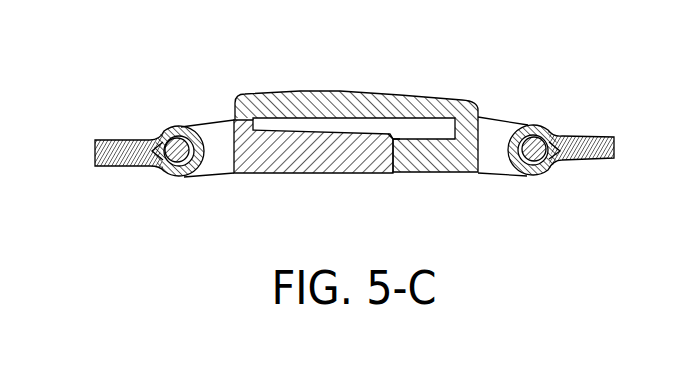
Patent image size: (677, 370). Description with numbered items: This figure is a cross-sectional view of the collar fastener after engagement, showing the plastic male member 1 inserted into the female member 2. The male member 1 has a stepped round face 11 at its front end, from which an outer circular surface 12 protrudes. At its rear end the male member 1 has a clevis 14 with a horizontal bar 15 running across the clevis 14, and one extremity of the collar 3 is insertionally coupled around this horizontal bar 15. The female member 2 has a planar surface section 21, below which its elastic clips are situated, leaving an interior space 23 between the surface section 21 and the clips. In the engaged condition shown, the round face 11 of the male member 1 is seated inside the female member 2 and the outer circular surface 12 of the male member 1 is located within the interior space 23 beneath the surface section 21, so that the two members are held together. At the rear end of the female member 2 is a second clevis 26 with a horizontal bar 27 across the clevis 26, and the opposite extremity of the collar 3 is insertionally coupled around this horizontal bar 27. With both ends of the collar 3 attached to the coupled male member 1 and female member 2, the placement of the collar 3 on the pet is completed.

The male member 1 is at (354, 152).
The female member 2 is at (356, 129).
The collar 3 is at (118, 168).
The round face 11 is at (293, 166).
The outer circular surface 12 is at (390, 135).
The clevis 14 is at (220, 138).
The horizontal bar 15 is at (161, 128).
The surface section 21 is at (423, 100).
The interior space 23 is at (427, 133).
The clevis 26 is at (503, 133).
The horizontal bar 27 is at (540, 127).